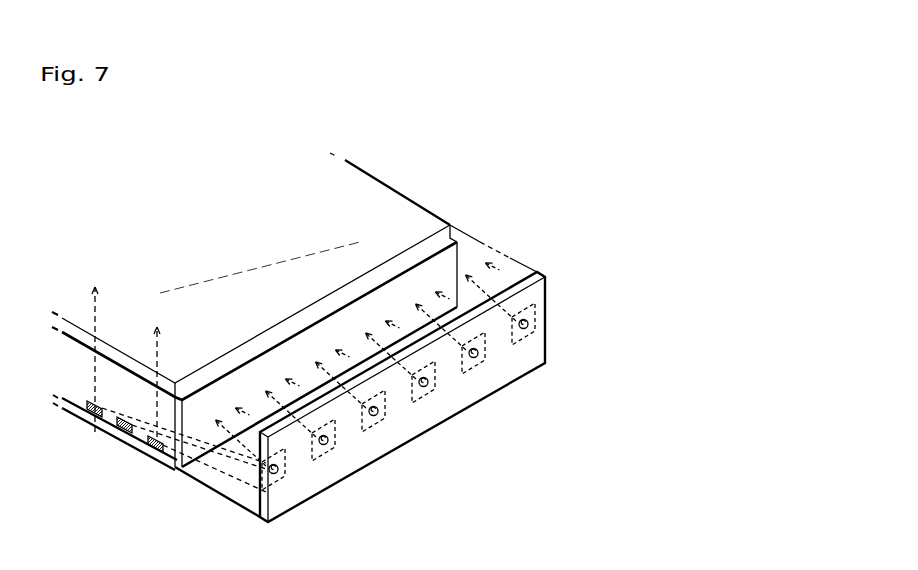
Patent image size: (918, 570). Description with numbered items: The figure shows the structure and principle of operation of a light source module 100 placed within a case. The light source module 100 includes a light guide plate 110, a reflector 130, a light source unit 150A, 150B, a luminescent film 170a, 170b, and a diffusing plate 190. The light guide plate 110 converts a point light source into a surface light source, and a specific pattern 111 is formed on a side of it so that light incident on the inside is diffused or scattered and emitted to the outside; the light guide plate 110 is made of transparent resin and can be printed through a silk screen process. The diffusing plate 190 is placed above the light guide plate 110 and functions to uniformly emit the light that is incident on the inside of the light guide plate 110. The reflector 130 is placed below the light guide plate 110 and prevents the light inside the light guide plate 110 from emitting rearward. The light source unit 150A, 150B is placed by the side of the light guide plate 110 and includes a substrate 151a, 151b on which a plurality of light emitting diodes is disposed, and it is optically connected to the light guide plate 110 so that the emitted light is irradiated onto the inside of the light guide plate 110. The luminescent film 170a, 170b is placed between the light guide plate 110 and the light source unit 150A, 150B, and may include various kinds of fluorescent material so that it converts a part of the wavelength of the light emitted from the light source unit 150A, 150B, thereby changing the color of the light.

The light source module 100 is at (390, 168).
The diffusing plate 190 is at (413, 217).
The luminescent film 170a is at (368, 334).
The luminescent film 170b is at (447, 277).
The substrate 151a is at (454, 376).
The substrate 151b is at (535, 332).
The light source unit 150A is at (490, 373).
The light source unit 150B is at (698, 348).
The light guide plate 110 is at (118, 398).
The specific pattern 111 is at (95, 416).
The reflector 130 is at (145, 438).